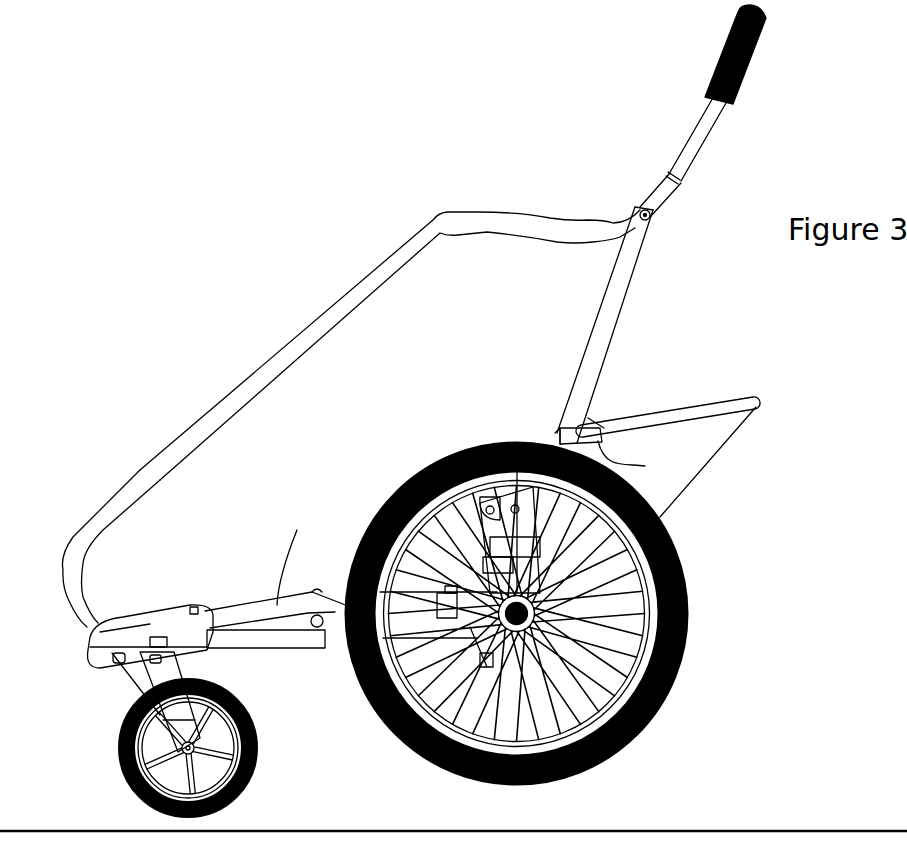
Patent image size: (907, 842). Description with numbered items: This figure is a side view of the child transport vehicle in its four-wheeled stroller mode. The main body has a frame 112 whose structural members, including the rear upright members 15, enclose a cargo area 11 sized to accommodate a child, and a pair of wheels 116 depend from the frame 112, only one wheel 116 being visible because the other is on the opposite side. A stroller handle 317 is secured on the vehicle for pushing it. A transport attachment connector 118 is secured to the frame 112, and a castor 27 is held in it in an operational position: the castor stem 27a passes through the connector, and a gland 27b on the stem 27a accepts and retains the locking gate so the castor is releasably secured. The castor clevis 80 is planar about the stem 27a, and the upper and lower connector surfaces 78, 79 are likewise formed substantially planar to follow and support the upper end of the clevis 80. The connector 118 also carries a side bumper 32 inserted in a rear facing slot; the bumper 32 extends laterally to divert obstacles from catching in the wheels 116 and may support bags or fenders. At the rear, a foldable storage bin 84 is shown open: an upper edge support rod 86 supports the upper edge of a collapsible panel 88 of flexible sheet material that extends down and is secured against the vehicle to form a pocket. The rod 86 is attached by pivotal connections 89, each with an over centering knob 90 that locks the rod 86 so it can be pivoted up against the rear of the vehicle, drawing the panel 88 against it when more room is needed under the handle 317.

The cargo area 11 is at (386, 413).
The frame 112 is at (208, 420).
The upright members 15 is at (603, 330).
The stroller handle 317 is at (743, 86).
The storage bin 84 is at (712, 448).
The pivotal connections 89 is at (583, 418).
The over centering knob 90 is at (638, 462).
The upper edge support rod 86 is at (758, 398).
The collapsible panel 88 is at (687, 473).
The wheel 116 is at (676, 535).
The castor clevis 80 is at (168, 683).
The side bumper 32 is at (299, 652).
The upper connector surface 78 is at (163, 623).
The transport attachment connector 118 is at (120, 612).
The lower connector surface 79 is at (157, 660).
The castor stem 27a is at (147, 624).
The gland 27b is at (117, 660).
The castor 27 is at (258, 765).